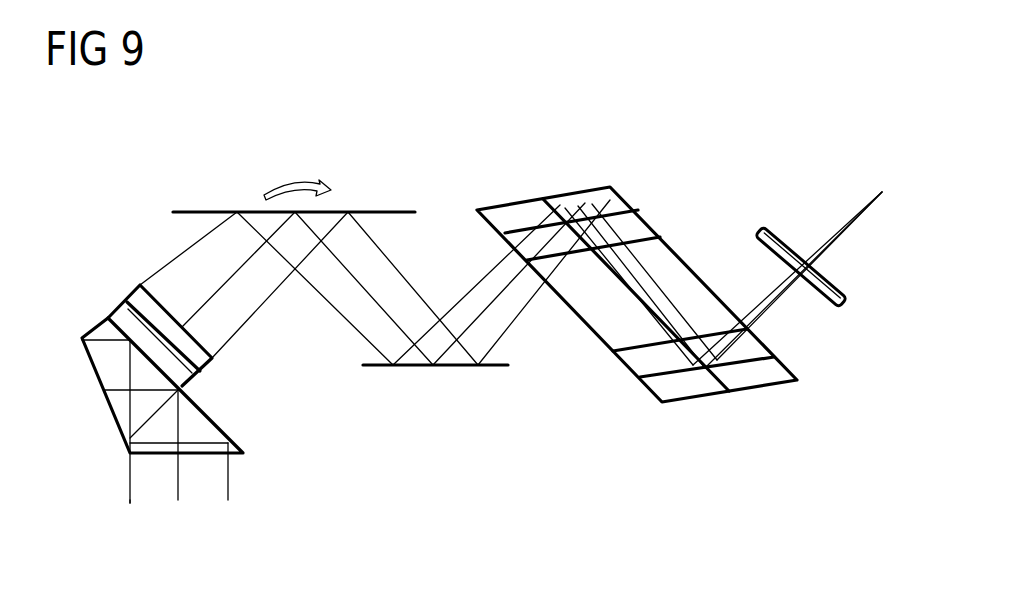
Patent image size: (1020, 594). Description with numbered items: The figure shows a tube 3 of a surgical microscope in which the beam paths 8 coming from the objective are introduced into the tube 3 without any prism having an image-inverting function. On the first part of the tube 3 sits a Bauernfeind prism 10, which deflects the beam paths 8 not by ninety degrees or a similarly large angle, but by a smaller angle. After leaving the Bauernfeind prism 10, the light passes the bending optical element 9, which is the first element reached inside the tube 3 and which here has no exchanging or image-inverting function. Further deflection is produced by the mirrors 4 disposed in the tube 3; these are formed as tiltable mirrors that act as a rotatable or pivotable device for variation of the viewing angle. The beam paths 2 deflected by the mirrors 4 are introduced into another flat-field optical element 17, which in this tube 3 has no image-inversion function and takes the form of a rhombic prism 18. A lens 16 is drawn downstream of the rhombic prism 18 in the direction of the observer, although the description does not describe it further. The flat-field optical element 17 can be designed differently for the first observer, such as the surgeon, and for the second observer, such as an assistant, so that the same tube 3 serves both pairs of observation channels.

The beam paths 2 is at (490, 272).
The tube 3 is at (637, 248).
The tiltable mirror 4 is at (220, 210).
The beam paths 8 is at (178, 490).
The bending optical element 9 is at (122, 302).
The Bauernfeind prism 10 is at (115, 406).
The lens 16 is at (762, 230).
The flat-field optical element 17 is at (637, 325).
The rhombic prism 18 is at (700, 386).